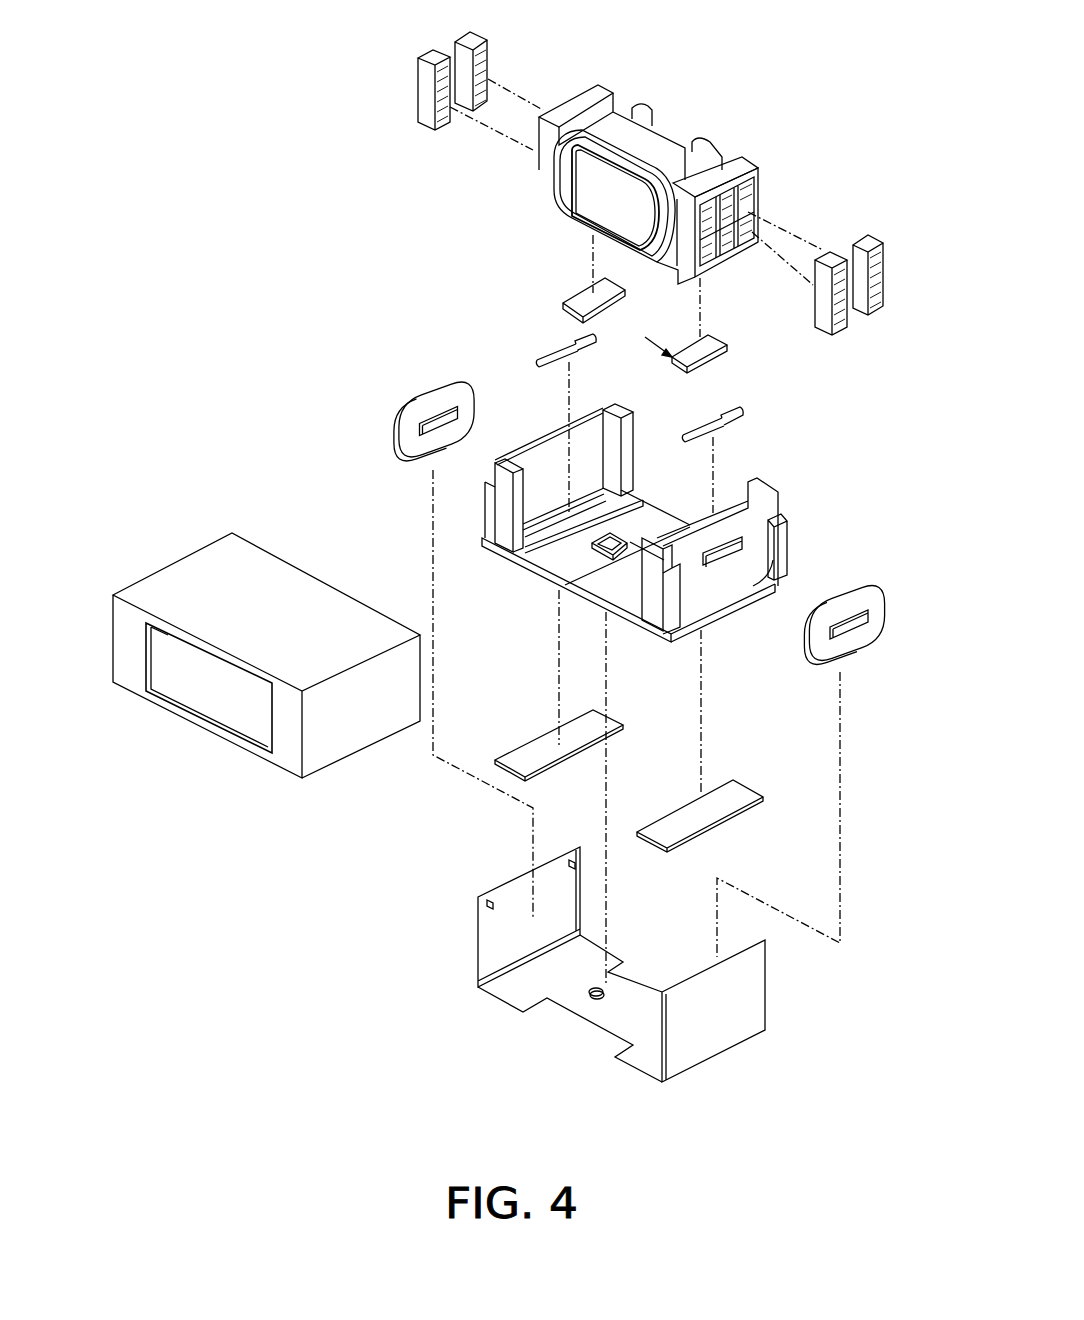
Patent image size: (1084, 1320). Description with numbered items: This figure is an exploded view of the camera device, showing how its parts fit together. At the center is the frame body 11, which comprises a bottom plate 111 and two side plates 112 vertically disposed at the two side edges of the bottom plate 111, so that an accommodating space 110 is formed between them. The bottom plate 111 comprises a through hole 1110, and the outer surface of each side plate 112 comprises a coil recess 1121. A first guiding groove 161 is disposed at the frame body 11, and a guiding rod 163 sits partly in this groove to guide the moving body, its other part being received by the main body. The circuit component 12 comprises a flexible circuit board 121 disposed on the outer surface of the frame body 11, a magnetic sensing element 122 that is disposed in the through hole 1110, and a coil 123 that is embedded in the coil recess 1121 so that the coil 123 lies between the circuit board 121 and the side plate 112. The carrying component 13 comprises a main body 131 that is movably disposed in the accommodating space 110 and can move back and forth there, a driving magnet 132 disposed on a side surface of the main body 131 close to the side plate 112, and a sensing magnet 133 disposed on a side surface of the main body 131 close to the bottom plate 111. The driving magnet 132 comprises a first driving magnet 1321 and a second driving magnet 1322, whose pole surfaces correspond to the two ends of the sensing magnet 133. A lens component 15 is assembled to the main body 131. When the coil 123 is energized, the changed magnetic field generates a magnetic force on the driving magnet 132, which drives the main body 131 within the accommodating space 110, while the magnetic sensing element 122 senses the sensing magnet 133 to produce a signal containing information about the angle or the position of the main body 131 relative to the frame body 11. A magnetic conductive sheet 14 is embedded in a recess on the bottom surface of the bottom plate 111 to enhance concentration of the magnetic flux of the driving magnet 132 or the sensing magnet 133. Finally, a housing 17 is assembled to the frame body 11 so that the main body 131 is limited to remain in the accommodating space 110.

The frame body 11 is at (512, 636).
The accommodating space 110 is at (546, 470).
The bottom plate 111 is at (550, 562).
The side plates 112 is at (500, 523).
The through hole 1110 is at (615, 545).
The coil recess 1121 is at (762, 520).
The first guiding groove 161 is at (598, 486).
The guiding rod 163 is at (563, 352).
The circuit component 12 is at (550, 1073).
The circuit board 121 is at (518, 997).
The magnetic sensing element 122 is at (592, 998).
The coil 123 is at (440, 393).
The carrying component 13 is at (496, 213).
The main body 131 is at (650, 140).
The driving magnet 132 is at (360, 33).
The first driving magnet 1321 is at (425, 80).
The second driving magnet 1322 is at (470, 40).
The sensing magnet 133 is at (585, 302).
The magnetic conductive sheet 14 is at (532, 745).
The lens component 15 is at (578, 183).
The housing 17 is at (205, 572).